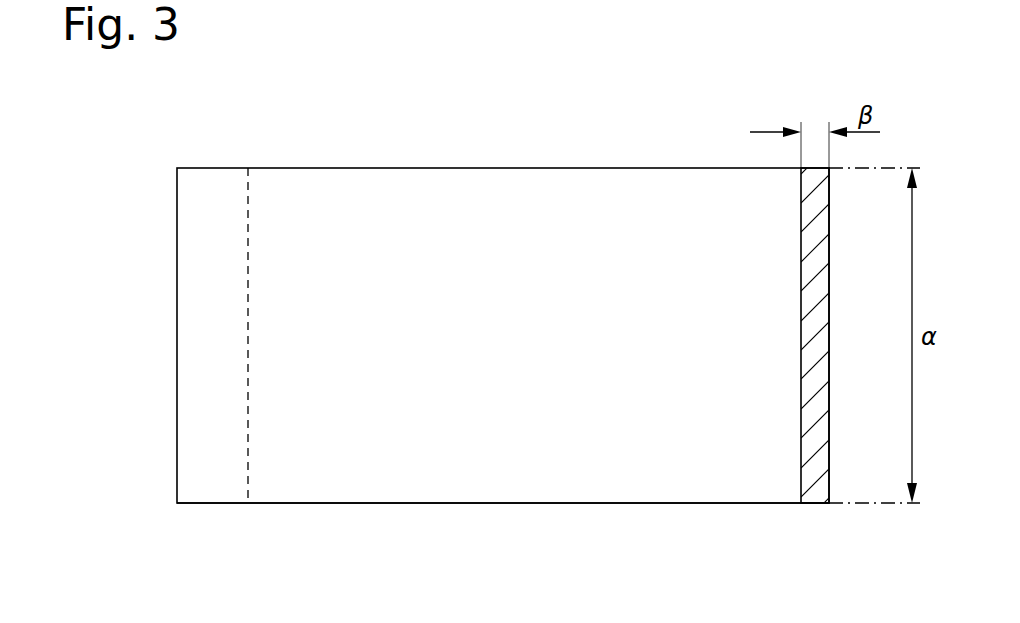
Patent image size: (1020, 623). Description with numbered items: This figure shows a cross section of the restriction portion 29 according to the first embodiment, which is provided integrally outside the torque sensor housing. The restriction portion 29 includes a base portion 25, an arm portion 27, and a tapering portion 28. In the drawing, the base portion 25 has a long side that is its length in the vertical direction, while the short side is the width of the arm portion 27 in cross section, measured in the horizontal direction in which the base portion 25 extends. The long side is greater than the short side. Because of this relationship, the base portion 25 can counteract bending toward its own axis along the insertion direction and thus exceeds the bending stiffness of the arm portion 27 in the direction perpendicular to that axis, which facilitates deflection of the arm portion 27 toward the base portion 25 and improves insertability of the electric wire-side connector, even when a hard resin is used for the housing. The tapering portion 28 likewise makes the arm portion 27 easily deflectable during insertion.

The base portion 25 is at (817, 350).
The arm portion 27 is at (381, 198).
The tapering portion 28 is at (170, 209).
The restriction portion 29 is at (507, 512).